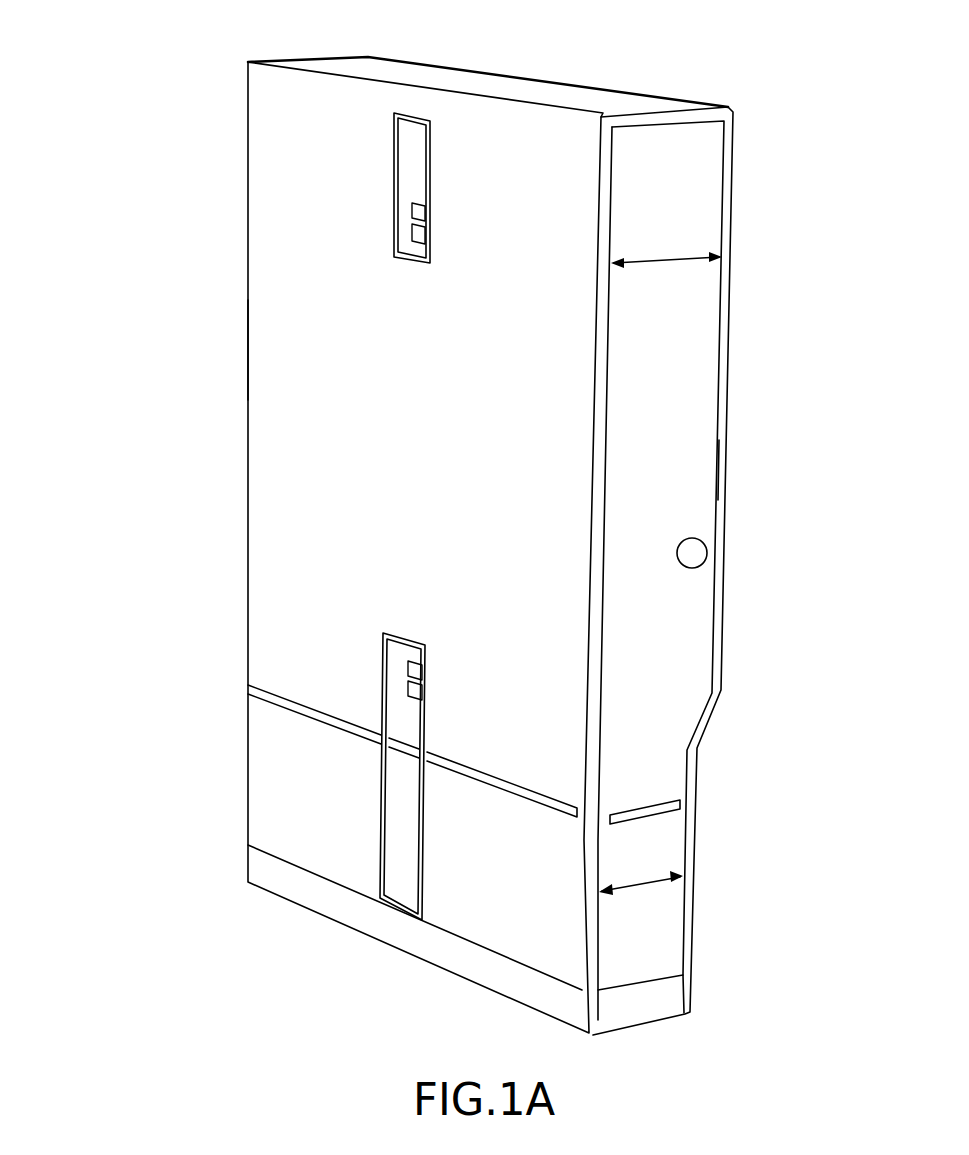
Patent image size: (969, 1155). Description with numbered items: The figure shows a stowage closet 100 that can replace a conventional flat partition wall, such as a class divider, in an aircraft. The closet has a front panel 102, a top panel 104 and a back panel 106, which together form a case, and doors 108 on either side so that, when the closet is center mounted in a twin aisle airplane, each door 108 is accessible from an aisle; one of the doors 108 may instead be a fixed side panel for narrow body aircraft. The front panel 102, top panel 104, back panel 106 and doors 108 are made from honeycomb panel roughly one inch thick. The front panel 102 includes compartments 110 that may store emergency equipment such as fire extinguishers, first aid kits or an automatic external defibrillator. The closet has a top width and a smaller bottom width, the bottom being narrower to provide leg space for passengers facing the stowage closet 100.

The stowage closet 100 is at (196, 176).
The front panel 102 is at (300, 515).
The top panel 104 is at (571, 95).
The back panel 106 is at (728, 317).
The doors 108 is at (255, 348).
The compartments 110 is at (410, 148).